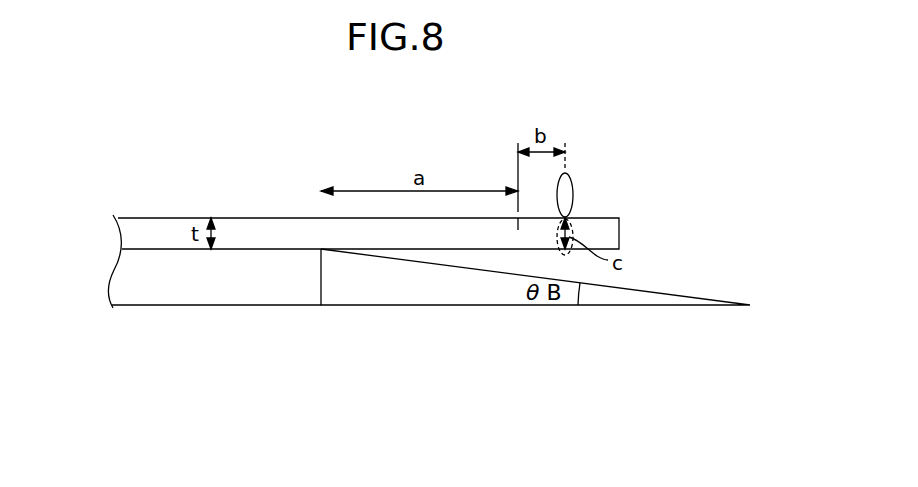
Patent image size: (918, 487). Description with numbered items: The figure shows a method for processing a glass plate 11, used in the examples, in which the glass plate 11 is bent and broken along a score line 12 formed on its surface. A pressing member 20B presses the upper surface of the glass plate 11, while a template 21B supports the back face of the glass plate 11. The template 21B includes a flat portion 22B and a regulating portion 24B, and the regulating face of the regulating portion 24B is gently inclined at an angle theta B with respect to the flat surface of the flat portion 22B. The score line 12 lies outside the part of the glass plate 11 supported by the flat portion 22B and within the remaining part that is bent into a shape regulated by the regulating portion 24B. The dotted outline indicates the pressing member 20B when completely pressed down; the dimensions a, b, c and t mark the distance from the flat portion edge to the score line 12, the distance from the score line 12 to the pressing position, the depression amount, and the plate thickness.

The glass plate 11 is at (619, 235).
The score line 12 is at (518, 225).
The pressing member 20B is at (573, 196).
The template 21B is at (431, 327).
The flat portion 22B is at (272, 305).
The regulating portion 24B is at (535, 306).